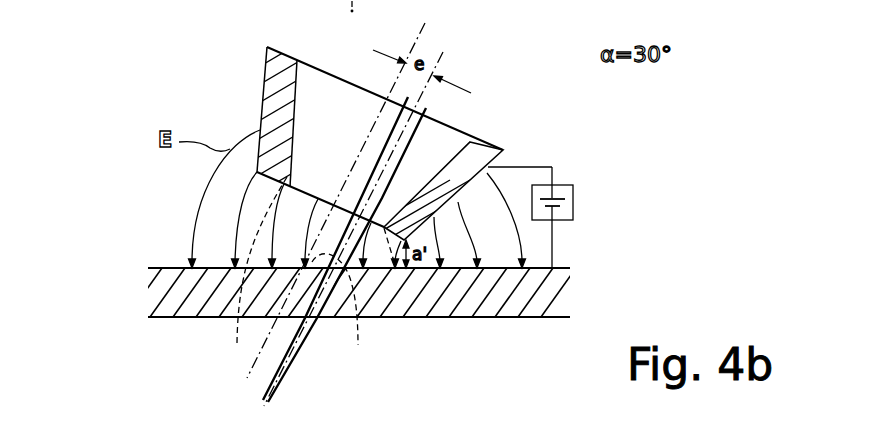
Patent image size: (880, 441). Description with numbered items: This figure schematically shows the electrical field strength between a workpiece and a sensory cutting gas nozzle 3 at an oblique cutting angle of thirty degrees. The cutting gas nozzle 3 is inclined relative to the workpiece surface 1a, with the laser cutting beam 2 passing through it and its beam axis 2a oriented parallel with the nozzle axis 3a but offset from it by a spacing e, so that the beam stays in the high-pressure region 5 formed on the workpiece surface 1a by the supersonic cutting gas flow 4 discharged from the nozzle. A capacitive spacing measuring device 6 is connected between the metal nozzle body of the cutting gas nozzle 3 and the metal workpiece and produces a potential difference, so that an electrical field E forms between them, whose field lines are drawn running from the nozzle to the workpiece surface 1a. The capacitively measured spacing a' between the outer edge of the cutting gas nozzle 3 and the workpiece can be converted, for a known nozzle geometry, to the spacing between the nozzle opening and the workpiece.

The workpiece surface 1a is at (171, 259).
The laser cutting beam 2 is at (430, 113).
The beam axis 2a is at (437, 63).
The cutting gas nozzle 3 is at (503, 150).
The nozzle axis 3a is at (417, 43).
The supersonic cutting gas flow 4 is at (256, 269).
The high-pressure region 5 is at (353, 295).
The capacitive spacing measuring device 6 is at (570, 192).